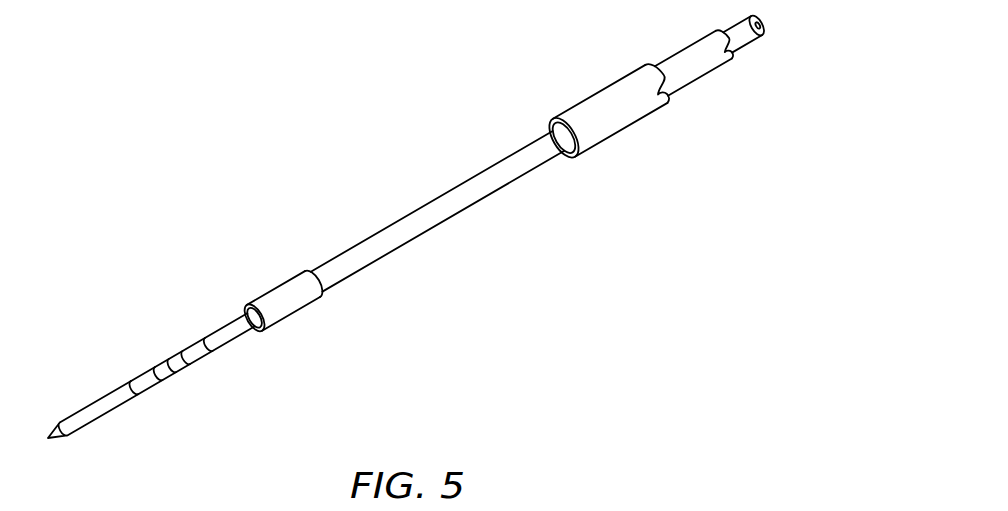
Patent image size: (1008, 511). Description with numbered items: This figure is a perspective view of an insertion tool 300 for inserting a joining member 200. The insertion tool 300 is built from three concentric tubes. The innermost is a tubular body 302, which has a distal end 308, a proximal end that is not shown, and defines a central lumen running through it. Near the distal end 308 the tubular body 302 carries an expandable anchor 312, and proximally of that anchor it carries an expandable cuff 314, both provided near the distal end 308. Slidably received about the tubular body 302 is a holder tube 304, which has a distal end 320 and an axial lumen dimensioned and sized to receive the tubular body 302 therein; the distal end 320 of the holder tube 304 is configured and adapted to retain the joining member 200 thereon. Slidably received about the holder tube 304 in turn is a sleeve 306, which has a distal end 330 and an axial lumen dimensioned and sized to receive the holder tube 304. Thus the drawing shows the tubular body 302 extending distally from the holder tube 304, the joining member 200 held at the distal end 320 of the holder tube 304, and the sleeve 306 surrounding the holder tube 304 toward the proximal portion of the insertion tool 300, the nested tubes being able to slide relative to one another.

The insertion tool 300 is at (405, 230).
The tubular body 302 is at (193, 353).
The holder tube 304 is at (437, 211).
The sleeve 306 is at (564, 138).
The distal end 308 is at (91, 412).
The expandable anchor 312 is at (169, 367).
The expandable cuff 314 is at (184, 358).
The distal end 320 is at (316, 282).
The joining member 200 is at (280, 302).
The distal end 330 is at (610, 110).